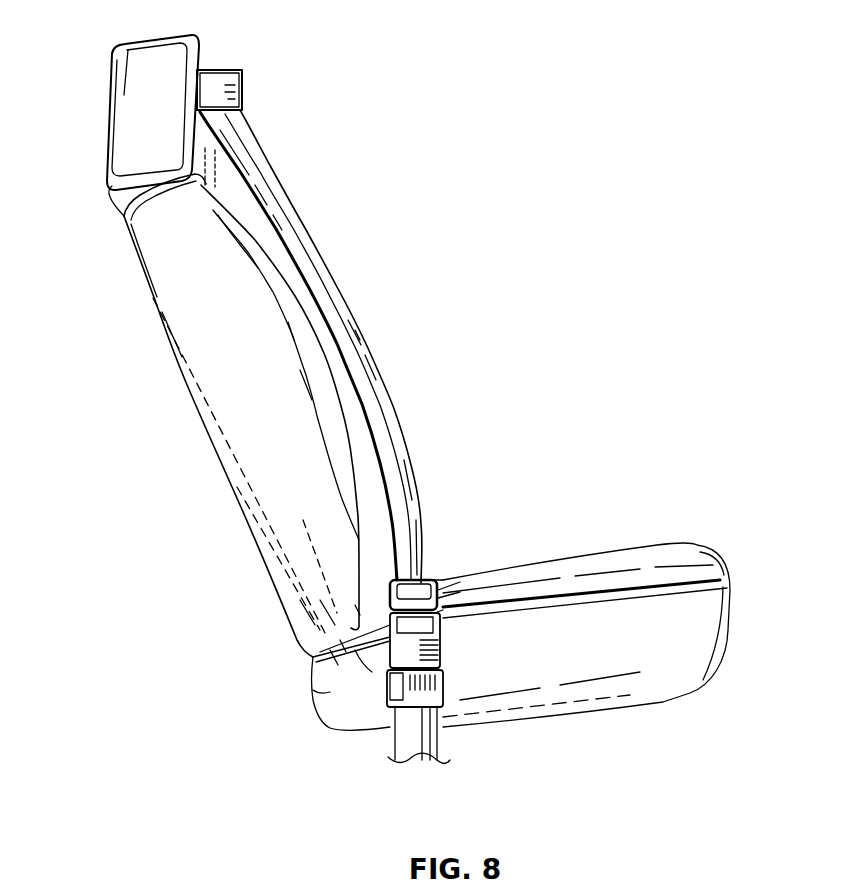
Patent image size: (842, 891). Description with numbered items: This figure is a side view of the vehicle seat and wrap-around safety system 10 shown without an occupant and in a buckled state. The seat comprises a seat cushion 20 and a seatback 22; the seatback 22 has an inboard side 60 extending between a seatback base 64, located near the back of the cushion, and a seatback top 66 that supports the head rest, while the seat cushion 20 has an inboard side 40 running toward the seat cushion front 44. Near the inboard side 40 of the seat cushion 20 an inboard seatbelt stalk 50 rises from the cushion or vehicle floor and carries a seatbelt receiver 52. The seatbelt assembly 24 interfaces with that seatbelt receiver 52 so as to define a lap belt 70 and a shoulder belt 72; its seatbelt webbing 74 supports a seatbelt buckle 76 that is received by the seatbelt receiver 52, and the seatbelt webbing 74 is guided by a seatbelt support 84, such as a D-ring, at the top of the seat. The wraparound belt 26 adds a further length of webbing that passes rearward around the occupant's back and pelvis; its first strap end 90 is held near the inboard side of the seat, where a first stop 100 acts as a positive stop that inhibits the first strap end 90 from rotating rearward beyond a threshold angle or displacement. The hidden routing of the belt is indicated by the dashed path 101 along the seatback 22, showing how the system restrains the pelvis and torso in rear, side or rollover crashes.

The vehicle seat and wrap-around safety system 10 is at (283, 71).
The seat cushion 20 is at (725, 682).
The seatback 22 is at (97, 134).
The seatbelt assembly 24 is at (258, 124).
The wraparound belt 26 is at (251, 604).
The inboard side 40 is at (597, 680).
The seat cushion front 44 is at (740, 590).
The inboard seatbelt stalk 50 is at (437, 738).
The seatbelt receiver 52 is at (440, 640).
The inboard side 60 is at (183, 333).
The seatback base 64 is at (352, 618).
The seatback top 66 is at (128, 212).
The lap belt 70 is at (440, 579).
The shoulder belt 72 is at (335, 271).
The seatbelt webbing 74 is at (400, 470).
The seatbelt buckle 76 is at (447, 582).
The seatbelt support 84 is at (213, 78).
The first strap end 90 is at (365, 658).
The first stop 100 is at (392, 685).
The hidden strap path 101 is at (235, 490).